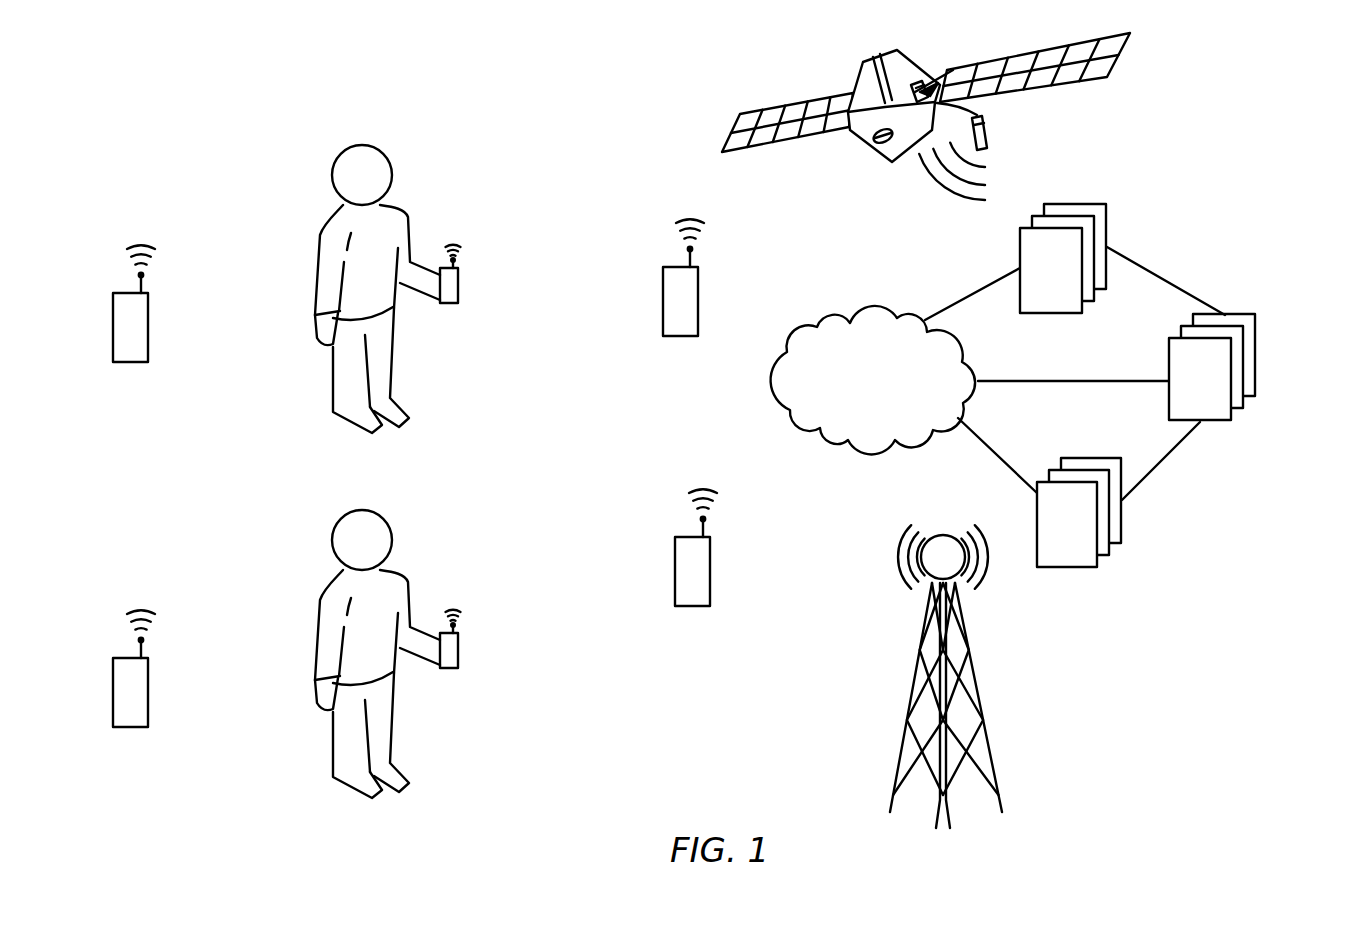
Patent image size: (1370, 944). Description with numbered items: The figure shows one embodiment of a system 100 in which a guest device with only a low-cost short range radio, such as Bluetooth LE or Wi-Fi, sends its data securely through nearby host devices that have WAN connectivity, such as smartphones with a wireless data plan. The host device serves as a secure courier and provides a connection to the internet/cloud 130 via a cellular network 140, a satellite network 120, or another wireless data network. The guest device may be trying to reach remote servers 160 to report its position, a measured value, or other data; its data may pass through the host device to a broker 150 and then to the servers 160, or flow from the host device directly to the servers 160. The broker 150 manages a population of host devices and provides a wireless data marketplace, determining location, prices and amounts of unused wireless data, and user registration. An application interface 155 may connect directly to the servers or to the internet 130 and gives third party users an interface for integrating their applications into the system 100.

The system 100 is at (226, 68).
The satellite network 120 is at (862, 72).
The internet/cloud 130 is at (889, 393).
The cellular network 140 is at (916, 672).
The broker 150 is at (1256, 343).
The application interface 155 is at (1122, 520).
The servers 160 is at (1106, 216).